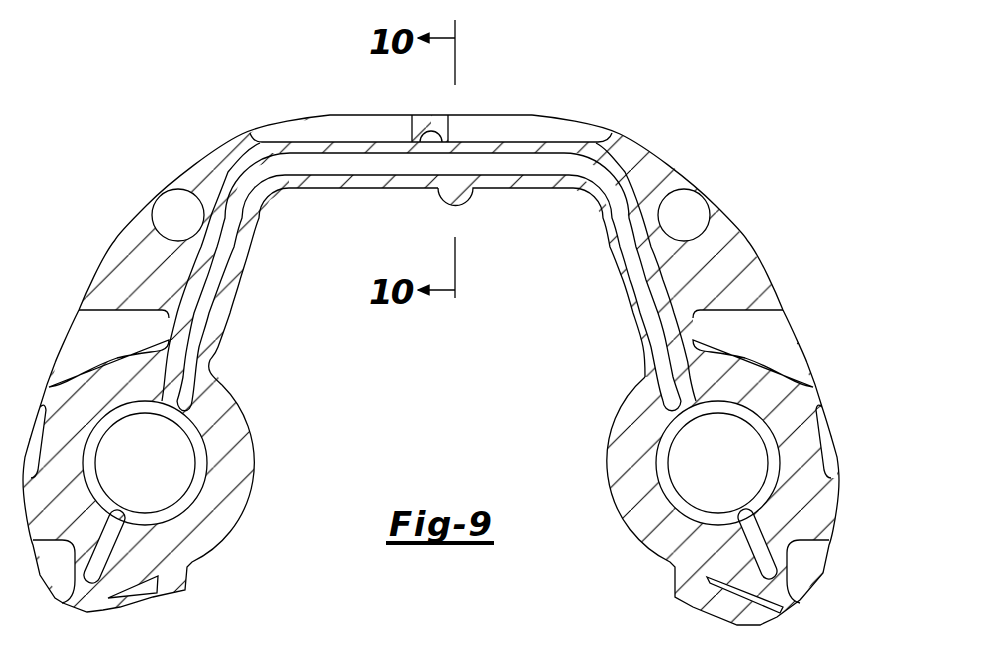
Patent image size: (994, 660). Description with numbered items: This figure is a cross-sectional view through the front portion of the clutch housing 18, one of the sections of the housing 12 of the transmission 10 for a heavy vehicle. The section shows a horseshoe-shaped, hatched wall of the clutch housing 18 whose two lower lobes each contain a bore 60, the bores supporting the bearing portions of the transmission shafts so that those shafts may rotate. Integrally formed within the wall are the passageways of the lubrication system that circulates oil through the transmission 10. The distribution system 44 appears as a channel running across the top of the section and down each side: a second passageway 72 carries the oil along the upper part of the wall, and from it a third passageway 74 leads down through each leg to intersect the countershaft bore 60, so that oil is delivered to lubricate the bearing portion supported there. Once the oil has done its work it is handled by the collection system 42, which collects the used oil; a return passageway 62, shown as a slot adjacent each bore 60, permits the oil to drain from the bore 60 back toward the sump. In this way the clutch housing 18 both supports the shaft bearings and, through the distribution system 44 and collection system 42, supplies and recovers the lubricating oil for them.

The transmission 10 is at (706, 124).
The housing 12 is at (764, 137).
The clutch housing 18 is at (804, 248).
The collection system 42 is at (784, 519).
The distribution system 44 is at (598, 252).
The bore 60 is at (190, 440).
The return passageway 62 is at (128, 543).
The second passageway 72 is at (515, 156).
The third passageway 74 is at (658, 288).